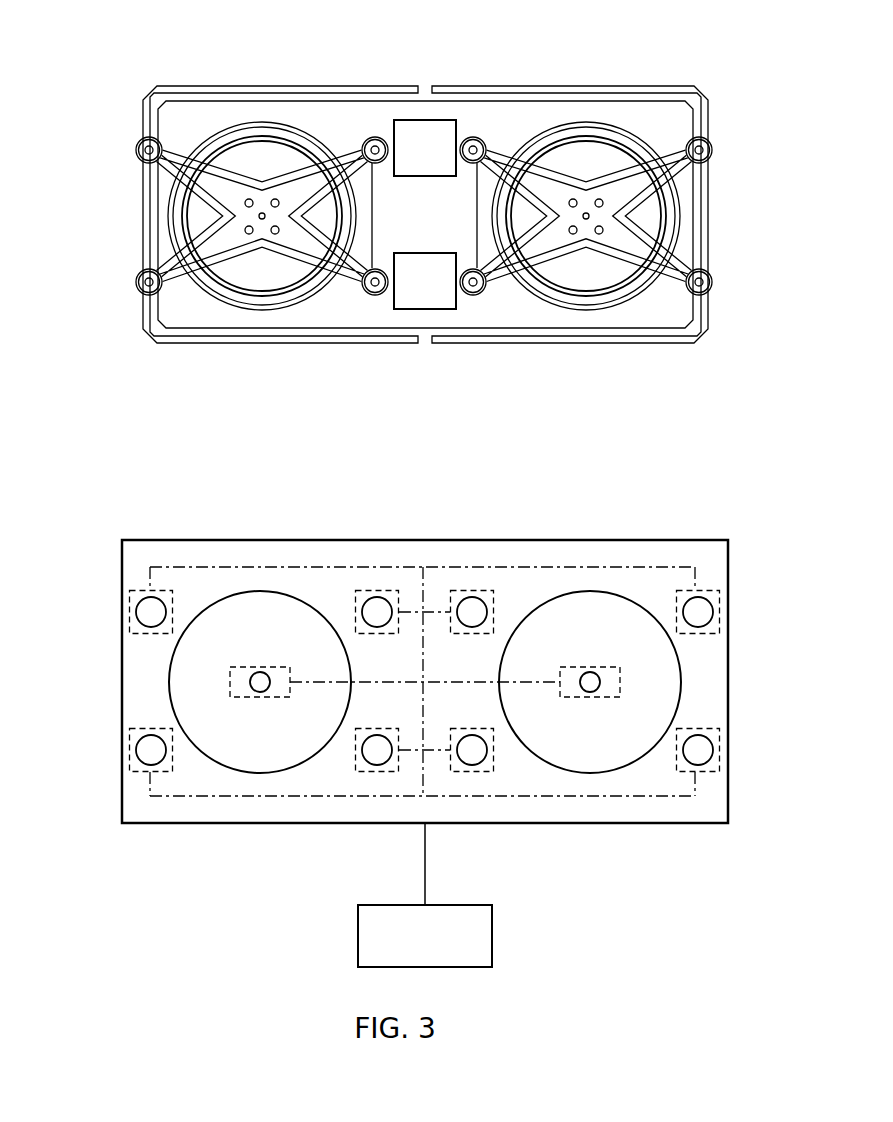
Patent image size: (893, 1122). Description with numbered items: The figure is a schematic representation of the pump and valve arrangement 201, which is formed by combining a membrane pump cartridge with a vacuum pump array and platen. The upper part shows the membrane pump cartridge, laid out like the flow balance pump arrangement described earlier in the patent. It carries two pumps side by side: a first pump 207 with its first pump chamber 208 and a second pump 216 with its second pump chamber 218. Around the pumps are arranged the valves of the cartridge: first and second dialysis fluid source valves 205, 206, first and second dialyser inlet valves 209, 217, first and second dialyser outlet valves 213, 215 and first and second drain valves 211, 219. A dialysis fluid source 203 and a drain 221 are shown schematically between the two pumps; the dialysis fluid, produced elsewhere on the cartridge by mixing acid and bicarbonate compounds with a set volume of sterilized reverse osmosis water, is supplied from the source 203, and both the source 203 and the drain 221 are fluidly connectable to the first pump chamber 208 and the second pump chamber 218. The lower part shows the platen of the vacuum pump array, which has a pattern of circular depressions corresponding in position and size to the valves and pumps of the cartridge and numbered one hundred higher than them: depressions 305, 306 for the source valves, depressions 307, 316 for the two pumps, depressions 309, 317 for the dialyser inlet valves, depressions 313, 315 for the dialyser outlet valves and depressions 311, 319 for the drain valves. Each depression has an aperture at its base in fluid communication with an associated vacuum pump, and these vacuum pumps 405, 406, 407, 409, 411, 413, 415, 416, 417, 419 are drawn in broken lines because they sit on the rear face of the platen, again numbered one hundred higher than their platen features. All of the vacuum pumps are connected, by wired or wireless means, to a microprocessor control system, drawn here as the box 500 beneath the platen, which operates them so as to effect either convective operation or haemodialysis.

The pump and valve arrangement 201 is at (70, 748).
The dialysis fluid source 203 is at (405, 293).
The first dialysis fluid source valve 205 is at (373, 293).
The second dialysis fluid source valve 206 is at (476, 293).
The first pump 207 is at (263, 282).
The first pump chamber 208 is at (235, 220).
The first dialyser inlet valve 209 is at (137, 276).
The first drain valve 211 is at (371, 138).
The first dialyser outlet valve 213 is at (137, 143).
The second dialyser outlet valve 215 is at (710, 141).
The second pump 216 is at (589, 150).
The second dialyser inlet valve 217 is at (710, 272).
The second pump chamber 218 is at (612, 222).
The second drain valve 219 is at (477, 138).
The drain 221 is at (405, 160).
The platen depression for first dialysis fluid source valve 305 is at (378, 596).
The platen depression for second dialysis fluid source valve 306 is at (474, 610).
The platen depression for first pump 307 is at (252, 755).
The platen depression for first dialyser inlet valve 309 is at (150, 596).
The platen depression for first drain valve 311 is at (376, 753).
The platen depression for first dialyser outlet valve 313 is at (150, 755).
The platen depression for second dialyser outlet valve 315 is at (700, 750).
The platen depression for second pump 316 is at (595, 757).
The platen depression for second dialyser inlet valve 317 is at (699, 611).
The platen depression for second drain valve 319 is at (473, 753).
The vacuum pump 405 is at (368, 592).
The vacuum pump 406 is at (469, 590).
The vacuum pump 407 is at (250, 665).
The vacuum pump 409 is at (128, 618).
The vacuum pump 411 is at (380, 773).
The vacuum pump 413 is at (128, 762).
The vacuum pump 415 is at (720, 762).
The vacuum pump 416 is at (590, 665).
The vacuum pump 417 is at (720, 617).
The vacuum pump 419 is at (468, 773).
The controller 500 is at (425, 895).